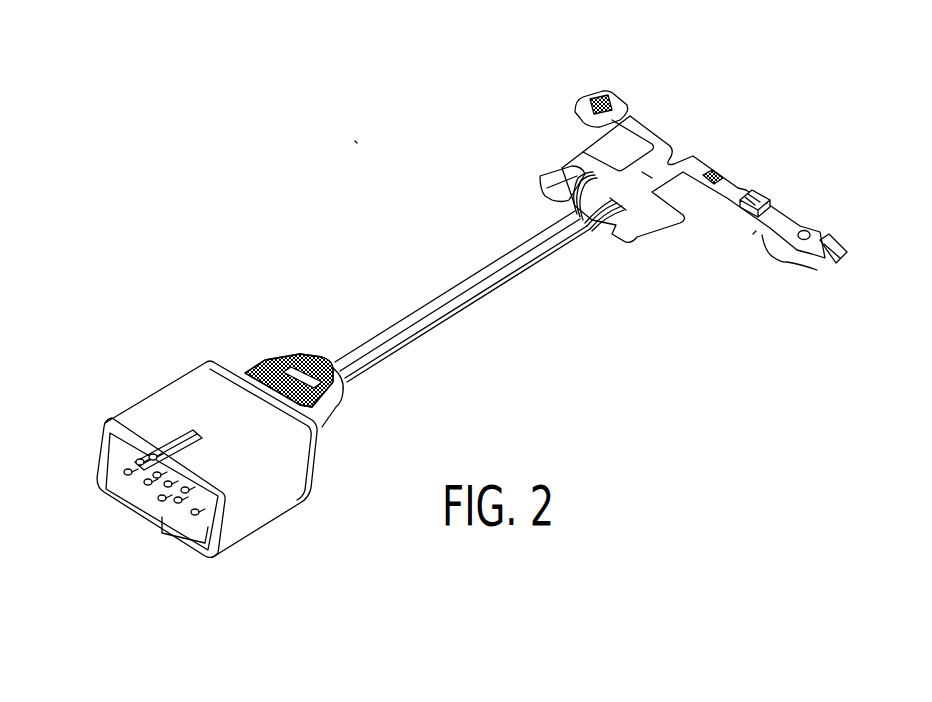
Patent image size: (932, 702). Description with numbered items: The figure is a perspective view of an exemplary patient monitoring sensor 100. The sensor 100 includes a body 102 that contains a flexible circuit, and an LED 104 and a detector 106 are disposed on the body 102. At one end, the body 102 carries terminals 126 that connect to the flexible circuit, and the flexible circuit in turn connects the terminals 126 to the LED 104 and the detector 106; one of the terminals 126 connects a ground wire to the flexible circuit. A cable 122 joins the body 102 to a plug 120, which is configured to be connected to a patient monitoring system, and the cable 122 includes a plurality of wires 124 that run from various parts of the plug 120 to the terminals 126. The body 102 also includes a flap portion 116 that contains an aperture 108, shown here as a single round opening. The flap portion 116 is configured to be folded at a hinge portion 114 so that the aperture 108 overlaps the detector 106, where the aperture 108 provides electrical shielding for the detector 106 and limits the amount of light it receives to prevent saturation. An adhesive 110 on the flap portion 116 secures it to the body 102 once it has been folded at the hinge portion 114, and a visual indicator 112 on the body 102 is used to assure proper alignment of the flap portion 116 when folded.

The patient monitoring sensor 100 is at (355, 141).
The body 102 is at (657, 130).
The LED 104 is at (623, 100).
The detector 106 is at (767, 192).
The aperture 108 is at (817, 230).
The adhesive 110 is at (843, 262).
The visual indicator 112 is at (717, 173).
The hinge portion 114 is at (753, 234).
The flap portion 116 is at (787, 263).
The plug 120 is at (209, 359).
The cable 122 is at (415, 306).
The wires 124 is at (545, 192).
The terminals 126 is at (562, 166).